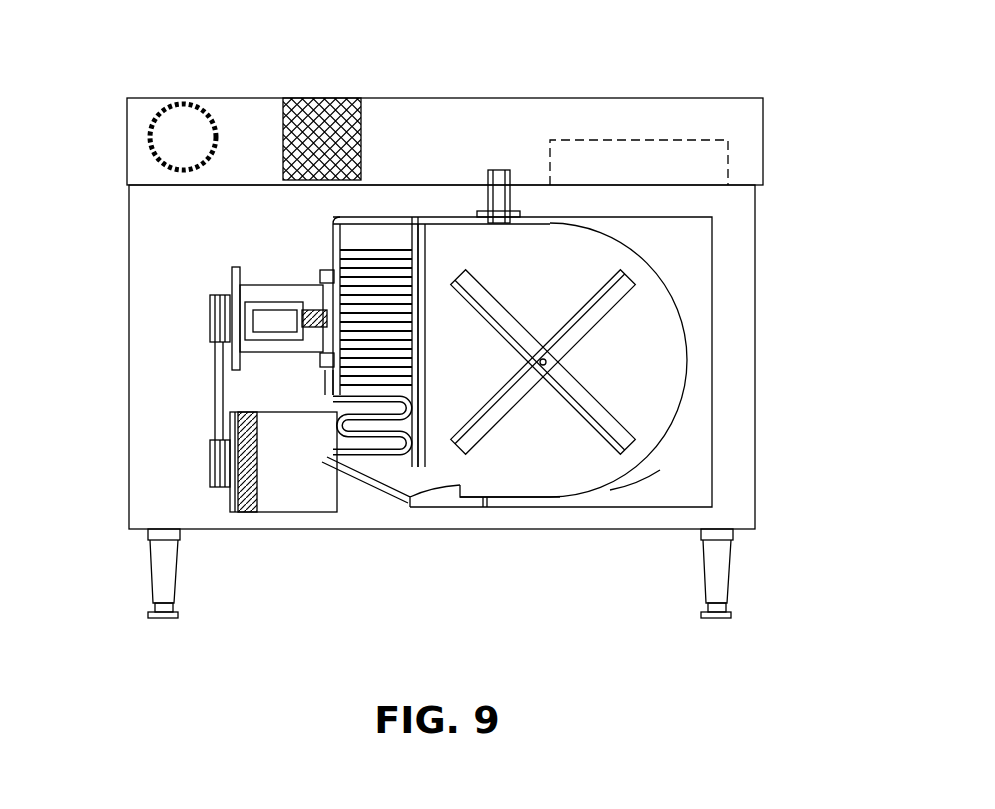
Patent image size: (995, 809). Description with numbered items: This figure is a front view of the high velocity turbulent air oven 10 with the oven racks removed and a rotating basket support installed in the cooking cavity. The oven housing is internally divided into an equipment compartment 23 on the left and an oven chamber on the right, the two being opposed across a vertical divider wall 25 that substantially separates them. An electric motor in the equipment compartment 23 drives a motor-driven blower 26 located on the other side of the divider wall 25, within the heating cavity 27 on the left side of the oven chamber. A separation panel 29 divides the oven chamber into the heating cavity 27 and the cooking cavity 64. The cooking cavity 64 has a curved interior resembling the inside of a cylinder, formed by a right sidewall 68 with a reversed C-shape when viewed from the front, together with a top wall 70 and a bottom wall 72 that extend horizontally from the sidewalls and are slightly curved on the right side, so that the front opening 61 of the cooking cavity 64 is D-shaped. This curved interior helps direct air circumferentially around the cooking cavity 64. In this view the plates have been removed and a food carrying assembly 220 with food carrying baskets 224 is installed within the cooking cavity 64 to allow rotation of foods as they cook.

The high velocity turbulent air oven 10 is at (793, 103).
The equipment compartment 23 is at (187, 248).
The divider wall 25 is at (325, 425).
The motor-driven blower 26 is at (333, 373).
The heating cavity 27 is at (397, 232).
The separation panel 29 is at (420, 235).
The front opening 61 is at (555, 495).
The cooking cavity 64 is at (638, 473).
The right sidewall 68 is at (687, 413).
The top wall 70 is at (575, 218).
The bottom wall 72 is at (532, 499).
The food carrying assembly 220 is at (543, 438).
The food carrying baskets 224 is at (604, 292).